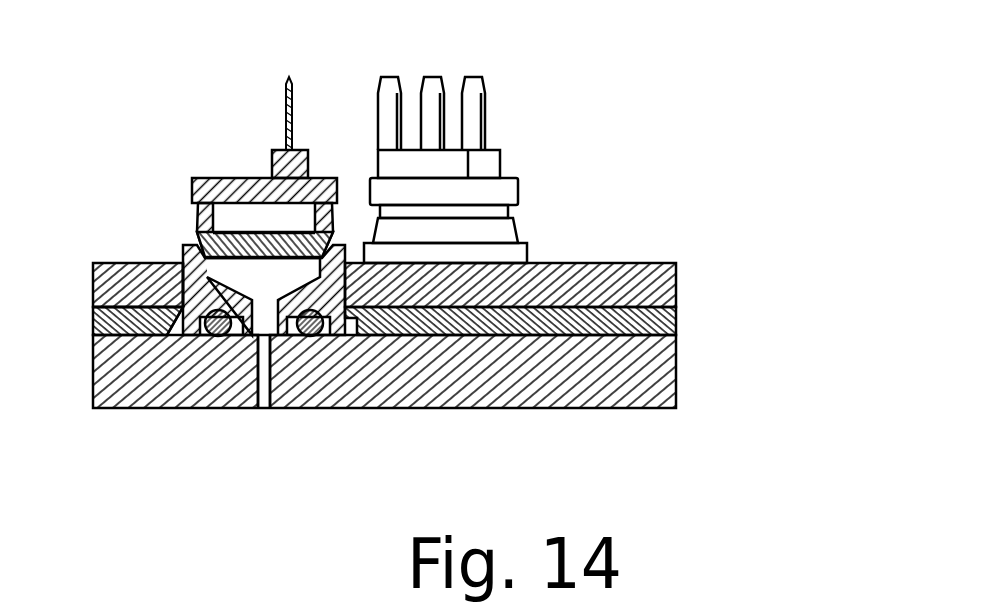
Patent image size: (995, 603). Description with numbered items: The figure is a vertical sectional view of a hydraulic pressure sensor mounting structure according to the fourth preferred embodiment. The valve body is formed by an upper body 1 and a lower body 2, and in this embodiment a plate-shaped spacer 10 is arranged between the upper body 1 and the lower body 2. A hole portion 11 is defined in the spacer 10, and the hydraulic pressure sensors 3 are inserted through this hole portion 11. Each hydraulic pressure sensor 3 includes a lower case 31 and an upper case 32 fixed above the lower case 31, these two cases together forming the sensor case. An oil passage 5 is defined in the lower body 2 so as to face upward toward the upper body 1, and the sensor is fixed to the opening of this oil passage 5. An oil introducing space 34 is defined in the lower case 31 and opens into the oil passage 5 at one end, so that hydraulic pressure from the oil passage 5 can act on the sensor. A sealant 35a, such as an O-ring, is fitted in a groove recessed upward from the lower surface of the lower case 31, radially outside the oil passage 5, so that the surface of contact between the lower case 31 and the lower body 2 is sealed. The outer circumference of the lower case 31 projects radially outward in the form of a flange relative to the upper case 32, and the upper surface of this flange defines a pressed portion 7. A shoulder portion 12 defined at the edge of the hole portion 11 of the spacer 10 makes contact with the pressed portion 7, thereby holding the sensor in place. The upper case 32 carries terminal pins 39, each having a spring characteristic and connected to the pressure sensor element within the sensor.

The upper body 1 is at (633, 263).
The lower body 2 is at (657, 388).
The spacer 10 is at (670, 326).
The hydraulic pressure sensor 3 is at (500, 220).
The terminal pin 39 is at (285, 120).
The upper case 32 is at (200, 180).
The lower case 31 is at (195, 300).
The oil introducing space 34 is at (258, 373).
The oil passage 5 is at (268, 325).
The sealant 35a is at (325, 330).
The shoulder portion 12 is at (165, 322).
The hole portion 11 is at (170, 313).
The pressed portion 7 is at (150, 309).